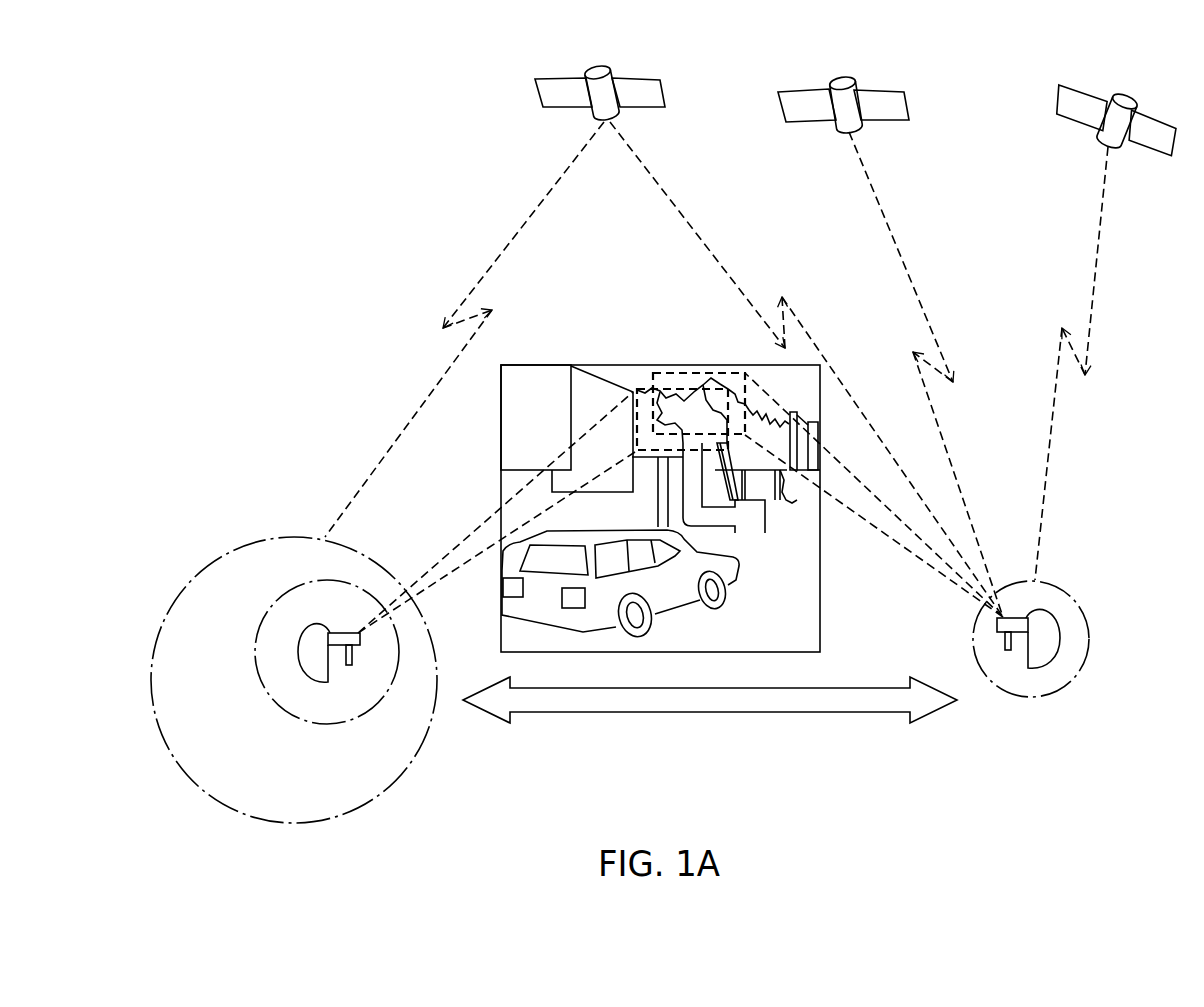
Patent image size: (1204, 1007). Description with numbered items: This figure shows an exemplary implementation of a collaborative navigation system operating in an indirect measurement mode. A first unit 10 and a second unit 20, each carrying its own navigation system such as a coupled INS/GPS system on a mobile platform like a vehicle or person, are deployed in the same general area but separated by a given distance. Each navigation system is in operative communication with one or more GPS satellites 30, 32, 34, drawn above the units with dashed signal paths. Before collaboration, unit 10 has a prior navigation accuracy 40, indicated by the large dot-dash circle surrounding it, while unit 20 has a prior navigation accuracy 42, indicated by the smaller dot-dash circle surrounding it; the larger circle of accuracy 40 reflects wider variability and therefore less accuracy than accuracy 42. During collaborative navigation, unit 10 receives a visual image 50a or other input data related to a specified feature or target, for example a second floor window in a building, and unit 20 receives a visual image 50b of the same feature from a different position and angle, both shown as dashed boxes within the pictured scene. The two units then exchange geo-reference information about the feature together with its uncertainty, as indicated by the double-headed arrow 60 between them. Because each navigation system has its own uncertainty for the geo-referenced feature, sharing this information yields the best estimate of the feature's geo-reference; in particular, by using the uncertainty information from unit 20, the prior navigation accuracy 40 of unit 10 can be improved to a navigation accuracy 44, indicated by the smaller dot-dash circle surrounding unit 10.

The first unit 10 is at (362, 638).
The second unit 20 is at (997, 626).
The GPS satellite 30 is at (597, 70).
The GPS satellite 32 is at (840, 81).
The GPS satellite 34 is at (1128, 98).
The prior navigation accuracy 40 is at (275, 824).
The prior navigation accuracy 42 is at (1075, 677).
The navigation accuracy 44 is at (257, 650).
The visual image 50a is at (645, 388).
The visual image 50b is at (692, 371).
The exchange of geo-reference information 60 is at (842, 690).